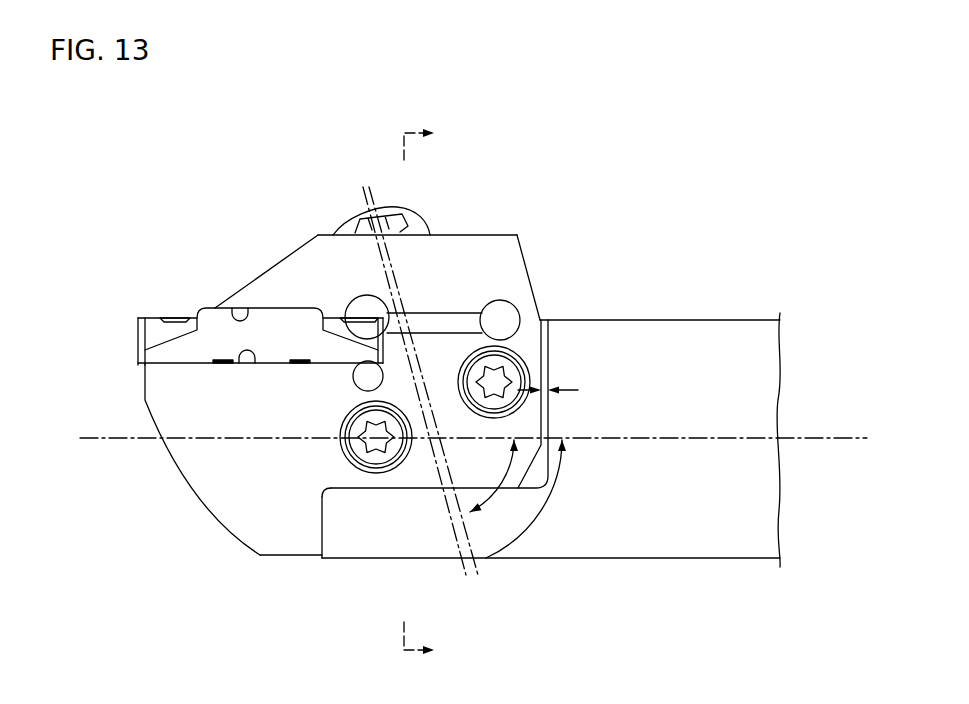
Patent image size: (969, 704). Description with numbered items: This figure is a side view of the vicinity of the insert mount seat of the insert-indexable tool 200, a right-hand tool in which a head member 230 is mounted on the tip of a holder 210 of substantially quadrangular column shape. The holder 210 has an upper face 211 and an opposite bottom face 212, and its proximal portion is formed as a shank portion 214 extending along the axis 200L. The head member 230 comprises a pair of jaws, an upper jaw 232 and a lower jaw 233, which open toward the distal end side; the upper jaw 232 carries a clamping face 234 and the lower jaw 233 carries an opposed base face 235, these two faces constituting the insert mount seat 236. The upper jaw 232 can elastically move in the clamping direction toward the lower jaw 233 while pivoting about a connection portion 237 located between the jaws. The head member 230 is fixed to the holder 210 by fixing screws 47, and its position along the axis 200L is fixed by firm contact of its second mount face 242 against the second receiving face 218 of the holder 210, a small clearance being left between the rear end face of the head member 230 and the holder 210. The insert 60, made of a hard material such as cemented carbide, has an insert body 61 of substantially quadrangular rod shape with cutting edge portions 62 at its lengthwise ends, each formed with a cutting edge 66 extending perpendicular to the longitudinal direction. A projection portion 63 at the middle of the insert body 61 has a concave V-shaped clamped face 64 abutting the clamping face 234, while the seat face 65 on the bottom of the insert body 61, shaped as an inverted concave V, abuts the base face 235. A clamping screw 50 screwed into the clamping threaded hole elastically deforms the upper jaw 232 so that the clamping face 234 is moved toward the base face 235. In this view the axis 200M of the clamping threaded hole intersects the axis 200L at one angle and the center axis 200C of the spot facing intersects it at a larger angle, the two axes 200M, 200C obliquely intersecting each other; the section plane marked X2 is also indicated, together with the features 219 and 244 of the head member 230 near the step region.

The insert-indexable tool 200 is at (158, 192).
The head member 230 is at (222, 545).
The upper jaw 232 is at (303, 256).
The lower jaw 233 is at (200, 486).
The clamping face 234 is at (237, 308).
The base face 235 is at (242, 365).
The insert mount seat 236 is at (487, 287).
The connection portion 237 is at (531, 320).
The second receiving face 218 is at (315, 538).
The notch corner 219 is at (340, 479).
The second mount face 242 is at (330, 522).
The notch upper face 244 is at (369, 495).
The holder 210 is at (633, 258).
The upper face 211 is at (703, 320).
The bottom face 212 is at (702, 560).
The shank portion 214 is at (765, 294).
The insert 60 is at (122, 358).
The insert body 61 is at (173, 366).
The cutting edge portions 62 is at (157, 333).
The projection portion 63 is at (208, 308).
The clamped face 64 is at (283, 298).
The seat face 65 is at (265, 365).
The cutting edge 66 is at (140, 318).
The fixing screws 47 is at (368, 430).
The clamping screw 50 is at (420, 205).
The axis 200L is at (830, 432).
The center axis 200C is at (463, 580).
The axis of the clamping threaded hole 200M is at (474, 567).
The section line X2 is at (421, 394).